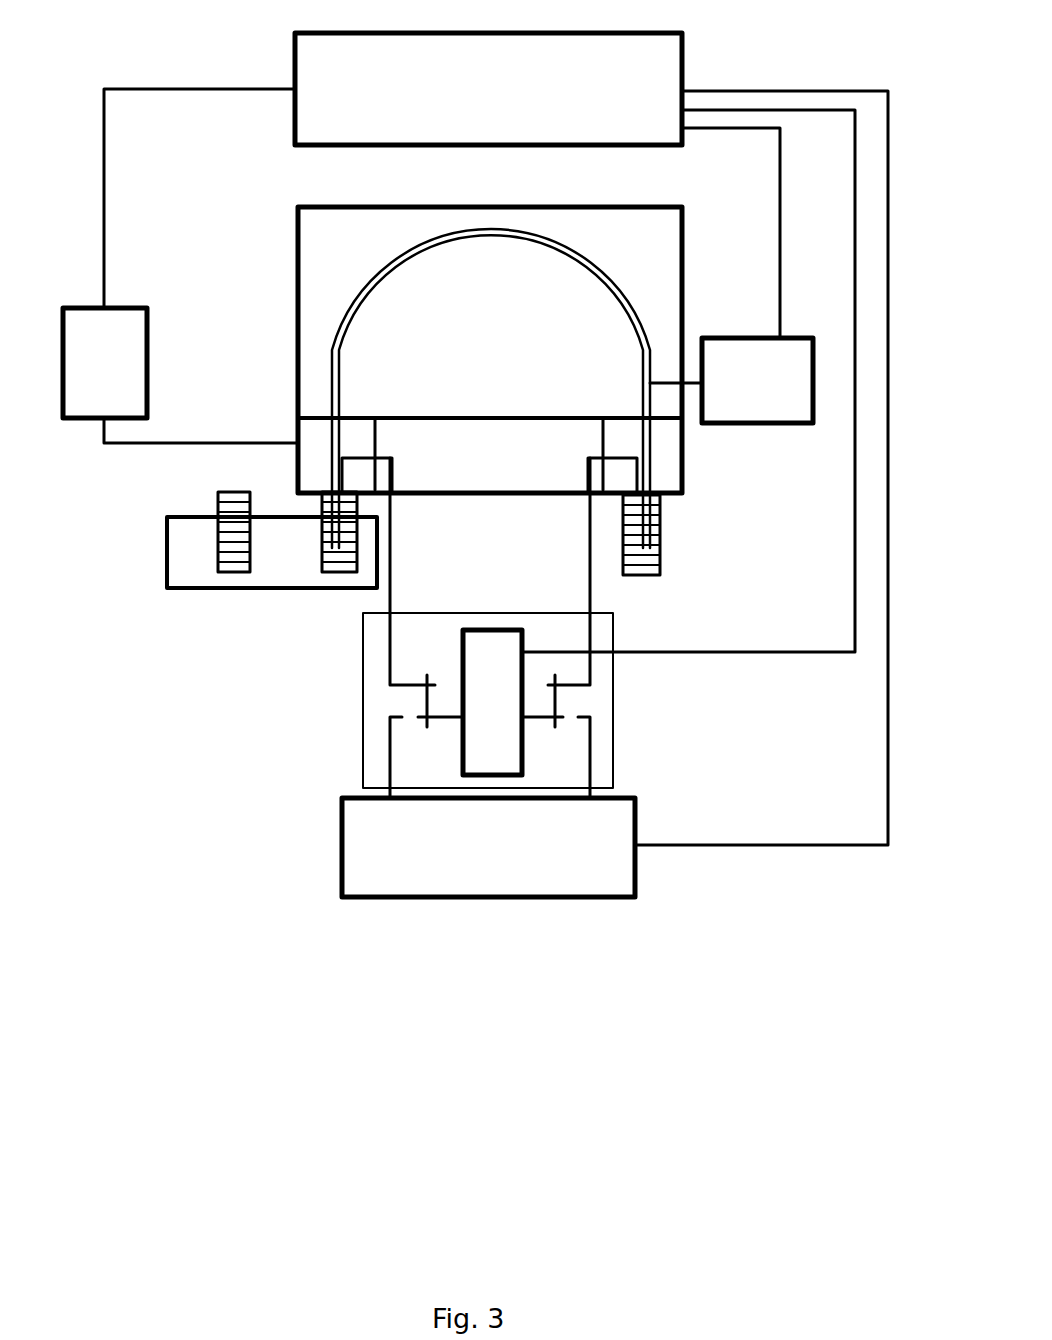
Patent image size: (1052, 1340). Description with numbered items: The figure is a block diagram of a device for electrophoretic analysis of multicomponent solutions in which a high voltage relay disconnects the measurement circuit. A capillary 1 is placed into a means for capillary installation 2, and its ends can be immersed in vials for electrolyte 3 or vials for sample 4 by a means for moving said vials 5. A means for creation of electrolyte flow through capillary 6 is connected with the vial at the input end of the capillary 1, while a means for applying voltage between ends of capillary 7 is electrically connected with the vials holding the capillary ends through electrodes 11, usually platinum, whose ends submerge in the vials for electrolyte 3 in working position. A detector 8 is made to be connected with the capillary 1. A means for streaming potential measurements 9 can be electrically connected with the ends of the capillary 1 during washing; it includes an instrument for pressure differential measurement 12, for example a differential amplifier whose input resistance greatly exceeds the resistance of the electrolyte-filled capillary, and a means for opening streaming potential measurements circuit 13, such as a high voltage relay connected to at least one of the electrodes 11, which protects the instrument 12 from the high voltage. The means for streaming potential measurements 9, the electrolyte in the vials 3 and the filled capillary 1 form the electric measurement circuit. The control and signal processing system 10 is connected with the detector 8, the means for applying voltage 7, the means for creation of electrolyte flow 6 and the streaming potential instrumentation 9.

The capillary 1 is at (425, 253).
The means for capillary installation 2 is at (656, 248).
The vials for electrolyte 3 is at (333, 574).
The vials for sample 4 is at (230, 574).
The means for moving said vials 5 is at (185, 552).
The means for creation of electrolyte flow through capillary 6 is at (108, 340).
The means for applying voltage between ends of capillary 7 is at (552, 845).
The detector 8 is at (758, 378).
The means for streaming potential measurements 9 is at (488, 617).
The control and signal processing system 10 is at (656, 72).
The electrodes 11 is at (345, 472).
The instrument for pressure differential measurement 12 is at (488, 730).
The means for opening streaming potential measurements circuit 13 is at (390, 663).